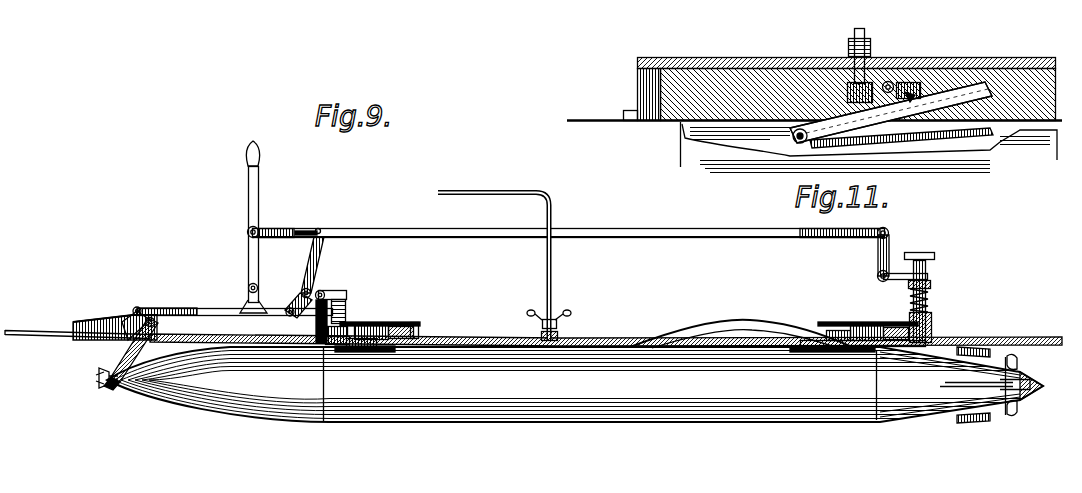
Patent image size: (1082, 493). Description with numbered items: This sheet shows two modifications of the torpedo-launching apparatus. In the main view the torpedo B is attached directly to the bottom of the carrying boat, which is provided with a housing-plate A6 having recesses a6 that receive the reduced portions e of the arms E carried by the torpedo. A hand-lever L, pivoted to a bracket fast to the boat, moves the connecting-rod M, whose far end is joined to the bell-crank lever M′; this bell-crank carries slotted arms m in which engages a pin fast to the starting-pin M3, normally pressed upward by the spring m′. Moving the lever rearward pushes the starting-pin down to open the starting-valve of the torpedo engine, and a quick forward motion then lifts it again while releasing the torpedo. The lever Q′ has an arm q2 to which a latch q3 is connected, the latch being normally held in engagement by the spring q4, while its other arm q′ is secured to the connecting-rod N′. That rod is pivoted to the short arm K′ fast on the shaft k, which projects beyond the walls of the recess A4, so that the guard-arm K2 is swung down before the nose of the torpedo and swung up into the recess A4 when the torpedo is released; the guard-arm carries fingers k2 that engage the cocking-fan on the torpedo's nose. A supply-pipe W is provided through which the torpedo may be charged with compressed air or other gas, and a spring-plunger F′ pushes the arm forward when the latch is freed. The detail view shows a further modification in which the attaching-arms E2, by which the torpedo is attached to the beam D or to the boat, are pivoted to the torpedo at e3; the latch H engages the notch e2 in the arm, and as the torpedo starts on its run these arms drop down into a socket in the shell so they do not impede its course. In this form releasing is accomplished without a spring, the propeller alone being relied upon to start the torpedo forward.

In FIG. 9, the torpedo B is at (575, 384).
In FIG. 11, the torpedo B is at (869, 150).
In FIG. 9, the recess A4 is at (82, 322).
In FIG. 9, the housing-plate A6 is at (735, 321).
In FIG. 9, the connecting-rod M is at (372, 228).
In FIG. 9, the hand-lever L is at (248, 190).
In FIG. 9, the connecting-rod N′ is at (196, 308).
In FIG. 9, the guard-arm K2 is at (132, 318).
In FIG. 9, the short arm K′ is at (141, 311).
In FIG. 9, the shaft k is at (158, 318).
In FIG. 9, the fingers k2 is at (115, 373).
In FIG. 9, the rudder b is at (98, 380).
In FIG. 9, the lever Q′ is at (311, 262).
In FIG. 9, the arm q′ is at (292, 298).
In FIG. 9, the arm q2 is at (330, 290).
In FIG. 9, the spring q4 is at (345, 312).
In FIG. 9, the latch q3 is at (318, 332).
In FIG. 11, the latch q3 is at (851, 46).
In FIG. 9, the arms E is at (330, 336).
In FIG. 9, the notch e2 is at (328, 343).
In FIG. 11, the notch e2 is at (915, 92).
In FIG. 9, the reduced arm portion e is at (356, 347).
In FIG. 9, the spring F′ is at (396, 327).
In FIG. 9, the recesses a6 is at (378, 325).
In FIG. 9, the supply-pipe W is at (553, 286).
In FIG. 9, the wing nut W′ is at (560, 320).
In FIG. 9, the bell-crank lever M′ is at (892, 260).
In FIG. 9, the starting-pin M3 is at (930, 274).
In FIG. 9, the slotted arms m is at (932, 285).
In FIG. 9, the spring m′ is at (930, 301).
In FIG. 11, the beam D is at (742, 82).
In FIG. 11, the attaching-arms E2 is at (972, 88).
In FIG. 11, the pivot e3 is at (788, 146).
In FIG. 11, the block h′ is at (868, 84).
In FIG. 11, the latch H is at (893, 84).